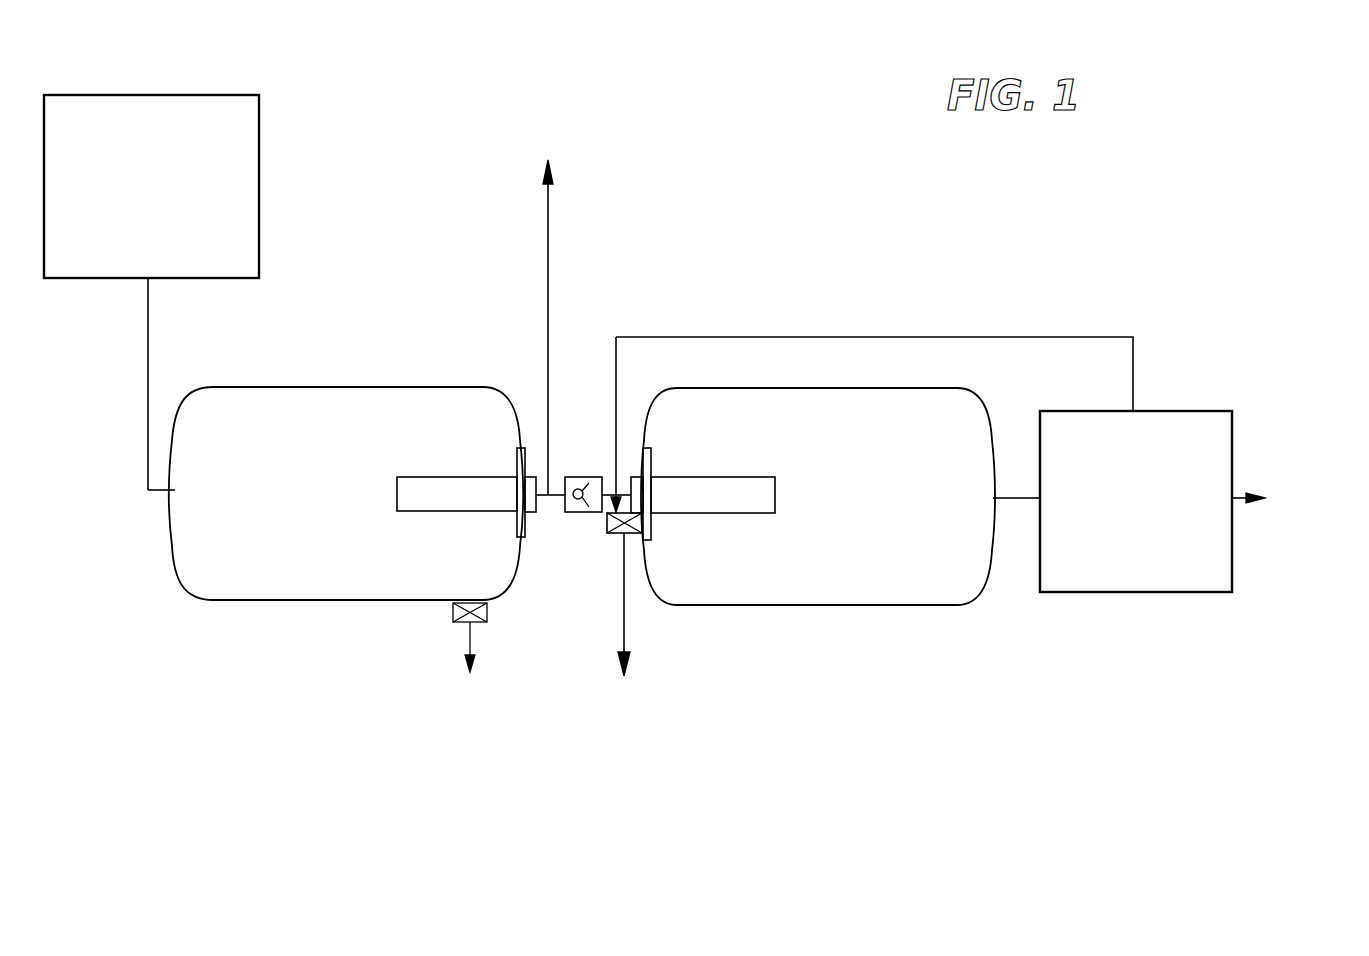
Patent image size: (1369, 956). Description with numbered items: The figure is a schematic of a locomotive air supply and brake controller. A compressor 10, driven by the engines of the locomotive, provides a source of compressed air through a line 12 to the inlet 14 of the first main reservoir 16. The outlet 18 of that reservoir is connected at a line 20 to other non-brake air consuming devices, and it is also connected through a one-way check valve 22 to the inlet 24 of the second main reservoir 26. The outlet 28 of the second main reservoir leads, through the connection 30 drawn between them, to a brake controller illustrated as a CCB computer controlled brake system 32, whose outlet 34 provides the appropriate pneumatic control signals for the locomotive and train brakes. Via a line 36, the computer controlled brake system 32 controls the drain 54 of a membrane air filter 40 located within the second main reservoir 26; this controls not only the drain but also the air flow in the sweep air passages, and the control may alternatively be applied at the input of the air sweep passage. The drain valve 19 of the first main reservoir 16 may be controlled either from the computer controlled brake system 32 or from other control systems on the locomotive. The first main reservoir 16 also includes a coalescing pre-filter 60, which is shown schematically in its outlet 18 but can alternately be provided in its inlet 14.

The compressor 10 is at (259, 120).
The line 12 is at (149, 355).
The inlet 14 is at (173, 508).
The first main reservoir 16 is at (222, 600).
The outlet 18 is at (531, 513).
The drain valve 19 is at (482, 622).
The line 20 is at (549, 277).
The one-way check valve 22 is at (585, 513).
The inlet 24 is at (635, 477).
The second main reservoir 26 is at (898, 588).
The outlet 28 is at (997, 500).
The supply line to CCB 30 is at (1025, 493).
The computer controlled brake system 32 is at (1143, 592).
The outlet 34 is at (1240, 493).
The line 36 is at (1043, 337).
The membrane air filter 40 is at (742, 477).
The drain 54 is at (620, 534).
The coalescing pre-filter 60 is at (403, 476).